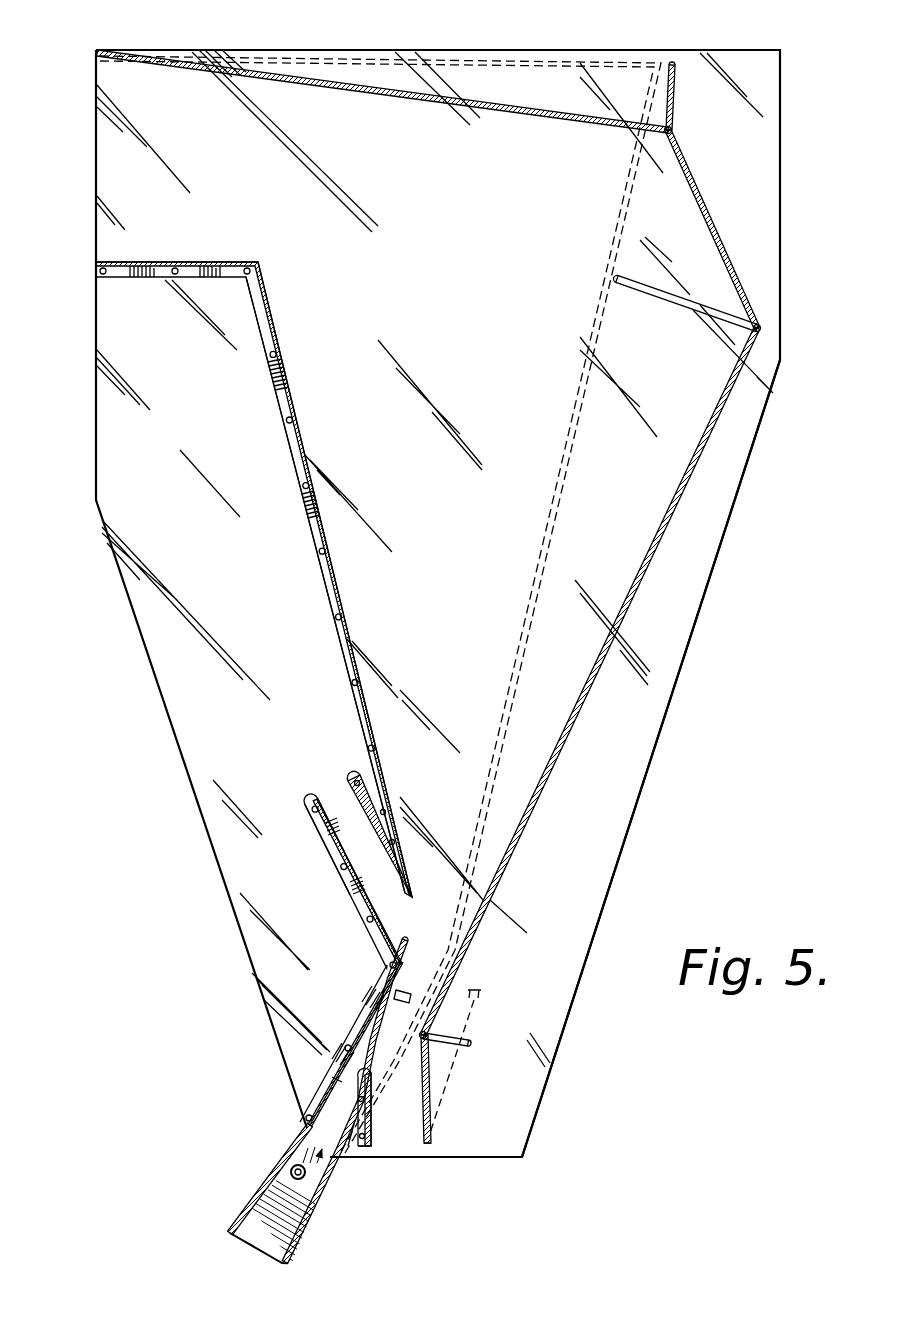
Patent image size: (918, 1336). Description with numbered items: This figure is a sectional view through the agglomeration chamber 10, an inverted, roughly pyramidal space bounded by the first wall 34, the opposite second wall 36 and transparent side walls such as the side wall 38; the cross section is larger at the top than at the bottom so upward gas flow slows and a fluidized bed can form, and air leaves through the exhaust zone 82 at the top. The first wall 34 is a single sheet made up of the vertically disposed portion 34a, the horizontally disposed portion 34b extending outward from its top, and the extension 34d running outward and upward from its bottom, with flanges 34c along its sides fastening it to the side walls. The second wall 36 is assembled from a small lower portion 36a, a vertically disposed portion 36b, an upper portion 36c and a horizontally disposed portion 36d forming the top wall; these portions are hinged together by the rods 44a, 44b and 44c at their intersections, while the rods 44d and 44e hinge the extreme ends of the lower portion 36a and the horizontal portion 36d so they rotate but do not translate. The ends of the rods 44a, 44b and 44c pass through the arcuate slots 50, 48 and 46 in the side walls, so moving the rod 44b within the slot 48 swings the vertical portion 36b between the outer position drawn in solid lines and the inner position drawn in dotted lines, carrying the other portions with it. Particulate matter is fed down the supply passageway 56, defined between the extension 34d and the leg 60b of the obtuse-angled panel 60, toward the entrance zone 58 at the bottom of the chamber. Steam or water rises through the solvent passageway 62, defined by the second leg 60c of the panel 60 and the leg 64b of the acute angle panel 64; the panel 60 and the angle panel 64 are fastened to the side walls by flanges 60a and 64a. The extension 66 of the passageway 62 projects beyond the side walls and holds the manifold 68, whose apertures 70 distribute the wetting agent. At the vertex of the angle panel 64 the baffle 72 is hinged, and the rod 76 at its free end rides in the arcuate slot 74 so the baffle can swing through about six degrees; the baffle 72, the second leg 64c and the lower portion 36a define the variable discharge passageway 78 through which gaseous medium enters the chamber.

The agglomeration chamber 10 is at (714, 629).
The exhaust zone 82 is at (126, 168).
The side wall 38 is at (492, 337).
The second wall 36 is at (683, 490).
The lower portion of second wall 36a is at (431, 1096).
The vertically disposed portion of second wall 36b is at (650, 557).
The upper portion of second wall 36c is at (698, 188).
The horizontally disposed portion of second wall 36d is at (462, 106).
The rod 44a is at (431, 1041).
The rod 44b is at (762, 330).
The rod 44c is at (671, 131).
The rod 44d is at (427, 1145).
The rod 44e is at (100, 50).
The arcuate slot 46 is at (676, 94).
The arcuate slot 48 is at (700, 292).
The arcuate slot 50 is at (466, 1042).
The first wall 34 is at (302, 437).
The vertically disposed portion of first wall 34a is at (321, 571).
The horizontally disposed portion of first wall 34b is at (143, 262).
The flanges 34c is at (270, 387).
The extension of first wall 34d is at (358, 781).
The supply passageway 56 is at (326, 777).
The entrance zone 58 is at (448, 890).
The panel 60 is at (375, 927).
The flanges 60a is at (325, 838).
The leg of panel 60b is at (332, 860).
The second leg of panel 60c is at (362, 1010).
The solvent passageway 62 is at (266, 1227).
The angle panel 64 is at (372, 1099).
The flanges 64a is at (362, 1148).
The leg of angle panel 64b is at (335, 1080).
The second leg of angle panel 64c is at (347, 1113).
The extension of solvent passageway 66 is at (253, 1189).
The manifold 68 is at (303, 1180).
The apertures 70 is at (308, 1168).
The baffle 72 is at (478, 992).
The arcuate slot 74 is at (430, 1010).
The rod 76 is at (403, 988).
The discharge passageway 78 is at (405, 1147).